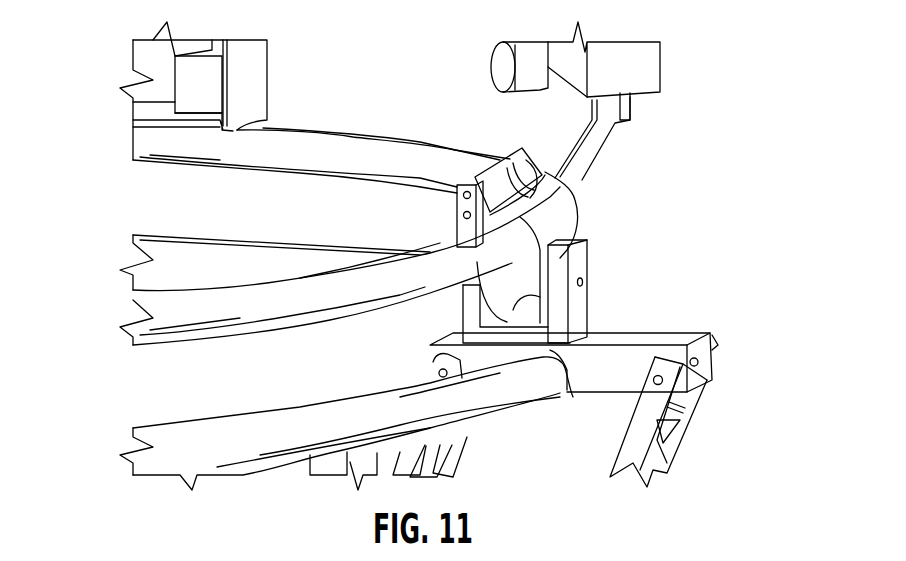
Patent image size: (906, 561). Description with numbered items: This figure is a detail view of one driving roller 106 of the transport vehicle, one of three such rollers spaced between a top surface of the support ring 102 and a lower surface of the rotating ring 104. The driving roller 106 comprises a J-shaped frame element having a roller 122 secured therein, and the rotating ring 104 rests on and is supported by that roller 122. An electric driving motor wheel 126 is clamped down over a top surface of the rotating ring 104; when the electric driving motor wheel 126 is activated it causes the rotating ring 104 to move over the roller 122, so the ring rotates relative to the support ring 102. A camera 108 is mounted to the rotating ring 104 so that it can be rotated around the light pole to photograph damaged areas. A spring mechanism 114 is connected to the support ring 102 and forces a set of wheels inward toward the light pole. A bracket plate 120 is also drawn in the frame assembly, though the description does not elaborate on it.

The support ring 102 is at (210, 440).
The rotating ring 104 is at (188, 310).
The driving roller 106 is at (610, 227).
The camera 108 is at (660, 70).
The spring mechanism 114 is at (660, 440).
The bracket plate 120 is at (463, 217).
The roller 122 is at (543, 297).
The electric driving motor wheel 126 is at (510, 160).